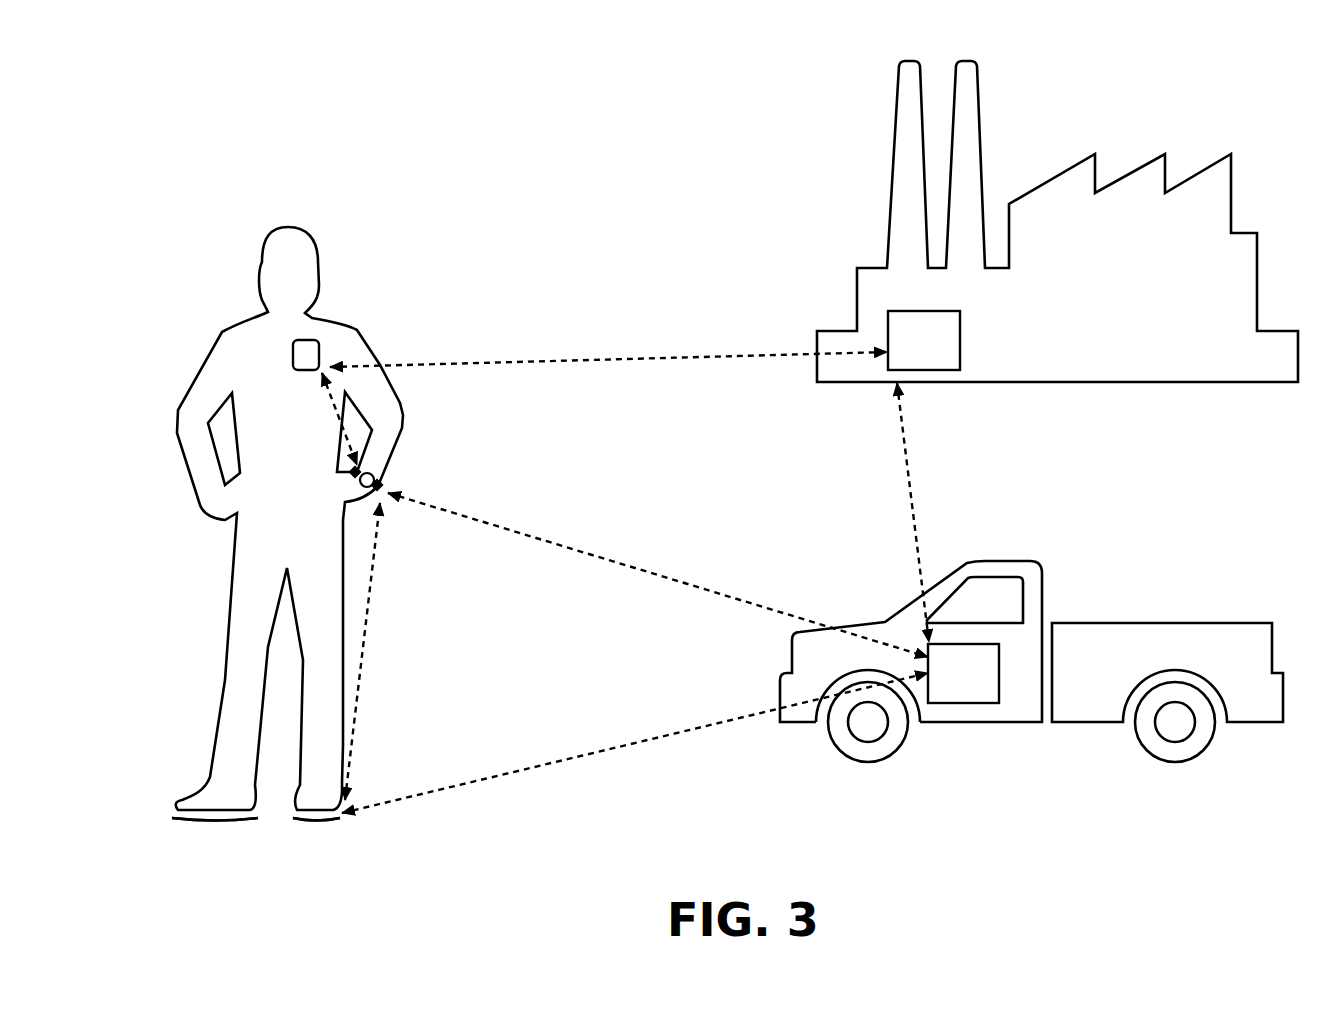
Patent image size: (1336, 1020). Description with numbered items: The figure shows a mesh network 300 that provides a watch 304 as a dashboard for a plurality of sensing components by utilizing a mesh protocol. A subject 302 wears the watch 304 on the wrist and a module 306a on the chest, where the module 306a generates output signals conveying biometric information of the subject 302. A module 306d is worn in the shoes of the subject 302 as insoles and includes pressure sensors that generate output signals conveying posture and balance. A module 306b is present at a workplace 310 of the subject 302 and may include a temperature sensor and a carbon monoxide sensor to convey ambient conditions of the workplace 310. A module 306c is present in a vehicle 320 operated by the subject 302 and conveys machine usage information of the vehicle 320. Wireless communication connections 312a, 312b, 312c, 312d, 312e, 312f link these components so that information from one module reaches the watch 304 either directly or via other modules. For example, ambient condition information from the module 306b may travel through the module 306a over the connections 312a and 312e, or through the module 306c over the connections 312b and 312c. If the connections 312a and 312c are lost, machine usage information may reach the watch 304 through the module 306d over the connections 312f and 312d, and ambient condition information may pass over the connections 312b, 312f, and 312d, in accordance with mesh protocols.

The mesh network 300 is at (622, 52).
The subject 302 is at (290, 226).
The watch 304 is at (361, 483).
The module 306a is at (313, 357).
The module 306b is at (924, 340).
The module 306c is at (963, 673).
The module 306d is at (248, 817).
The workplace 310 is at (855, 302).
The wireless communication connection 312a is at (608, 352).
The wireless communication connection 312b is at (932, 512).
The wireless communication connection 312c is at (658, 575).
The wireless communication connection 312d is at (381, 651).
The wireless communication connection 312e is at (319, 419).
The wireless communication connection 312f is at (635, 743).
The vehicle 320 is at (1072, 622).